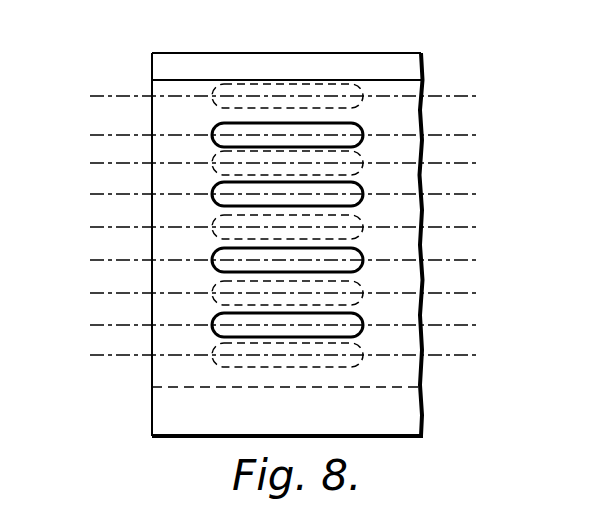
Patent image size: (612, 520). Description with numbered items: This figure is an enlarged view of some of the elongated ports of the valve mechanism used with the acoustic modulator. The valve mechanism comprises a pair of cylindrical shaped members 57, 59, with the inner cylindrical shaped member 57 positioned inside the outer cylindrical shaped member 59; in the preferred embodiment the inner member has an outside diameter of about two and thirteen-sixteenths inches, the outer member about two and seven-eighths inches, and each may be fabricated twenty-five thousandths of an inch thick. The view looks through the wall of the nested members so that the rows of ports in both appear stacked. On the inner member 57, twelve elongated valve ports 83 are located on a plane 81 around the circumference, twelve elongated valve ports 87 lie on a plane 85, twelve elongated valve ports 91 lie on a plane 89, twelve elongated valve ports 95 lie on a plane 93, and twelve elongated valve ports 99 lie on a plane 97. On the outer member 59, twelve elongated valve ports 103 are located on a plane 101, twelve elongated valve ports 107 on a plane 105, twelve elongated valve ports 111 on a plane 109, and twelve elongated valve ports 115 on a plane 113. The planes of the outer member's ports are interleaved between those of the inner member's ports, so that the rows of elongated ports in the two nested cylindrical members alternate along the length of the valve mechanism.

The cylindrical shaped member 57 is at (300, 50).
The cylindrical shaped member 59 is at (412, 412).
The plane 81 is at (478, 96).
The elongated valve ports 83 is at (212, 101).
The plane 85 is at (478, 163).
The elongated valve ports 87 is at (212, 168).
The plane 89 is at (478, 227).
The elongated valve ports 91 is at (212, 232).
The plane 93 is at (478, 293).
The elongated valve ports 95 is at (212, 298).
The plane 97 is at (478, 355).
The elongated valve ports 99 is at (212, 360).
The plane 101 is at (478, 135).
The elongated valve ports 103 is at (212, 140).
The plane 105 is at (478, 194).
The elongated valve ports 107 is at (212, 199).
The plane 109 is at (478, 260).
The elongated valve ports 111 is at (212, 265).
The plane 113 is at (478, 325).
The elongated valve ports 115 is at (212, 330).